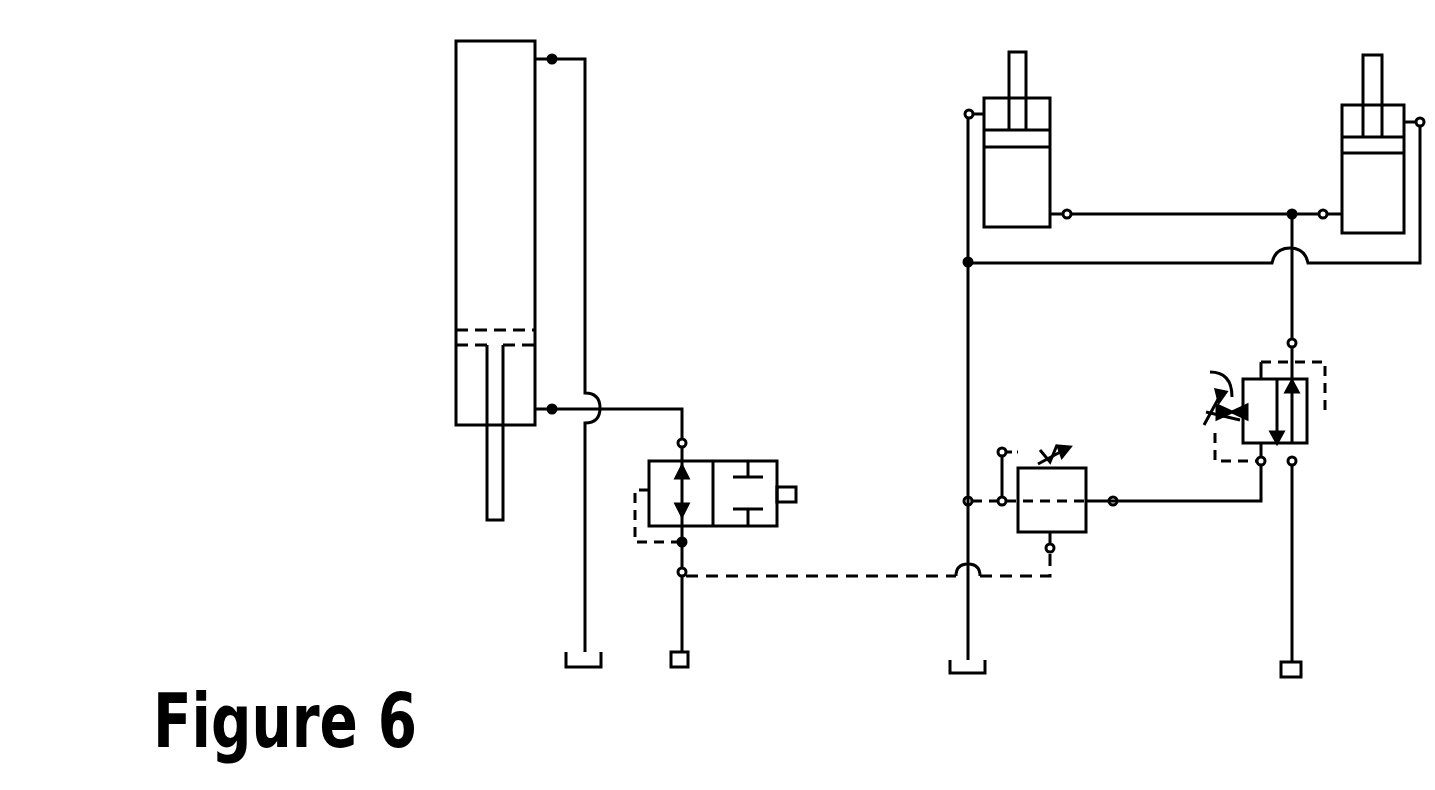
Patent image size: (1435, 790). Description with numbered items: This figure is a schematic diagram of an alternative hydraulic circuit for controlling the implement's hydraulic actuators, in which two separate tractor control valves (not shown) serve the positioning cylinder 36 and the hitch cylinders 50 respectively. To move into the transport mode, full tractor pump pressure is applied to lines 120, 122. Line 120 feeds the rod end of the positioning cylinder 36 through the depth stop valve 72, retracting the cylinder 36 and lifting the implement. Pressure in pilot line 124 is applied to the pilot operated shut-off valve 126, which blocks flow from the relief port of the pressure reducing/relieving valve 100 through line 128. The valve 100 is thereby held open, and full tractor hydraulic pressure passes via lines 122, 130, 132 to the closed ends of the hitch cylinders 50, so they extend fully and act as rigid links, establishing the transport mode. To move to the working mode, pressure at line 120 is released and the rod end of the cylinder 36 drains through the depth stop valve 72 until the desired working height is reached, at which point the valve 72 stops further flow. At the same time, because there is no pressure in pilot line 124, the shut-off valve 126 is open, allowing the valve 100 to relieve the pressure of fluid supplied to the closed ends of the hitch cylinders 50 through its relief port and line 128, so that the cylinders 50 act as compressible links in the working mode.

The positioning cylinder 36 is at (456, 138).
The hitch cylinders 50 is at (1050, 108).
The depth stop valve 72 is at (760, 461).
The pressure reducing/relieving valve 100 is at (1307, 440).
The line 120 is at (682, 610).
The line 122 is at (1292, 583).
The pilot line 124 is at (832, 576).
The pilot operated shut-off valve 126 is at (1068, 532).
The line 128 is at (1207, 502).
The line 130 is at (1292, 278).
The line 132 is at (1162, 212).